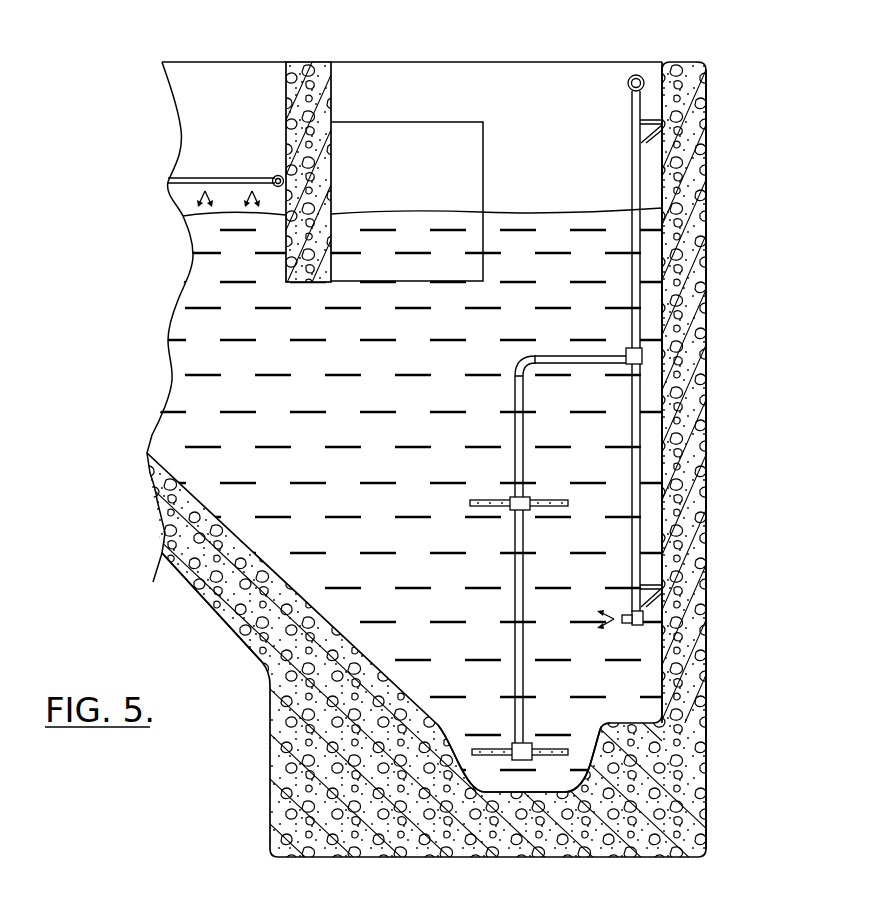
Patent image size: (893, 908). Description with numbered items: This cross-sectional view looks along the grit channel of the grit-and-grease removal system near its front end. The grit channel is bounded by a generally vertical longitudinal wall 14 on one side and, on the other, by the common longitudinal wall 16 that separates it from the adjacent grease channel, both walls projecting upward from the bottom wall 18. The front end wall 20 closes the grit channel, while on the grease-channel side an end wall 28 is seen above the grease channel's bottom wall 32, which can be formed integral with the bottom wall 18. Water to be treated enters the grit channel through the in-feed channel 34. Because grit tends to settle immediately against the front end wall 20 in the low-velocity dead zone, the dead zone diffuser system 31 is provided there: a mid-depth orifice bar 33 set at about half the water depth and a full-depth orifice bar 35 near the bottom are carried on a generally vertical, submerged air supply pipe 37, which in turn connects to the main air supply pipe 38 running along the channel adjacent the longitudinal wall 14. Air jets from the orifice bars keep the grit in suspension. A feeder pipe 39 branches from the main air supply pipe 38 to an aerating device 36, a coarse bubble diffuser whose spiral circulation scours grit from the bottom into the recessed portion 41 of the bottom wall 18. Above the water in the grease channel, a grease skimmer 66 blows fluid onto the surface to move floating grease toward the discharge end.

The longitudinal wall 14 is at (703, 196).
The longitudinal wall 16 is at (313, 283).
The bottom wall 18 is at (427, 712).
The end wall 20 is at (532, 60).
The end wall 28 is at (218, 62).
The dead zone diffuser system 31 is at (468, 428).
The bottom wall 32 is at (272, 568).
The mid-depth orifice bar 33 is at (460, 503).
The in-feed channel 34 is at (388, 128).
The full-depth orifice bar 35 is at (483, 740).
The aerating device 36 is at (632, 609).
The air supply pipe 37 is at (515, 472).
The main air supply pipe 38 is at (642, 77).
The feeder pipe 39 is at (633, 397).
The recessed portion 41 is at (551, 790).
The grease skimmer 66 is at (215, 177).